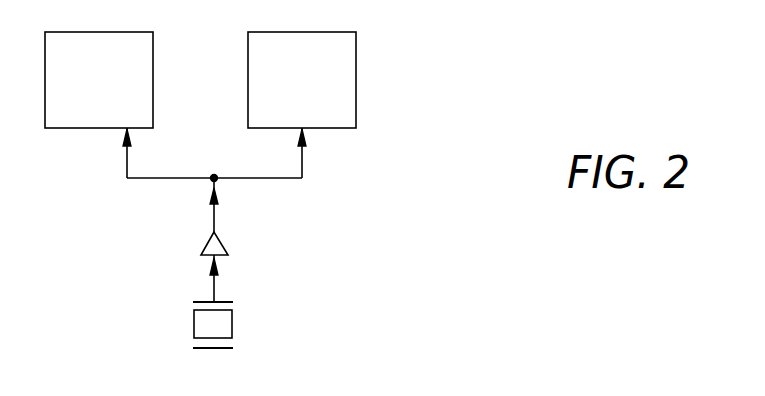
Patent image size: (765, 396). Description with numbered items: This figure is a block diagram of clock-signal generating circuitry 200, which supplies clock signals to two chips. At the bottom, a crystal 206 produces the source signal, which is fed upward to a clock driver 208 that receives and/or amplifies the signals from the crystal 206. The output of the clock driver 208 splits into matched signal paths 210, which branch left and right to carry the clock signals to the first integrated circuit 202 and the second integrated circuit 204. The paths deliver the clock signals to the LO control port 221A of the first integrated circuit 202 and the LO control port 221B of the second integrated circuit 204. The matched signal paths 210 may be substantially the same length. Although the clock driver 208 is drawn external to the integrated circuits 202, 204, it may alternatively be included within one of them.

The clock-signal generating circuitry 200 is at (505, 33).
The first integrated circuit 202 is at (141, 32).
The second integrated circuit 204 is at (343, 32).
The crystal 206 is at (146, 311).
The clock driver 208 is at (205, 237).
The matched signal paths 210 is at (130, 161).
The LO control port 221A is at (124, 138).
The LO control port 221B is at (299, 138).